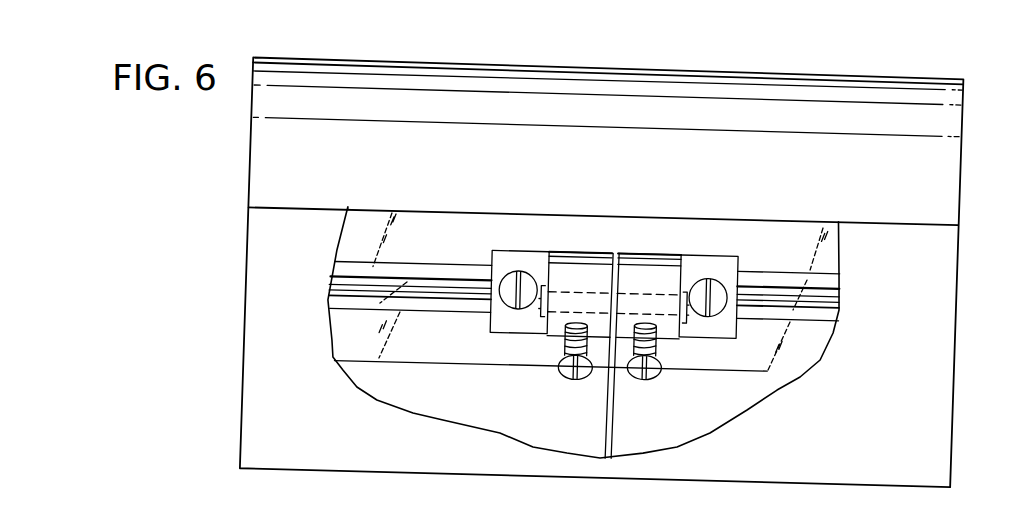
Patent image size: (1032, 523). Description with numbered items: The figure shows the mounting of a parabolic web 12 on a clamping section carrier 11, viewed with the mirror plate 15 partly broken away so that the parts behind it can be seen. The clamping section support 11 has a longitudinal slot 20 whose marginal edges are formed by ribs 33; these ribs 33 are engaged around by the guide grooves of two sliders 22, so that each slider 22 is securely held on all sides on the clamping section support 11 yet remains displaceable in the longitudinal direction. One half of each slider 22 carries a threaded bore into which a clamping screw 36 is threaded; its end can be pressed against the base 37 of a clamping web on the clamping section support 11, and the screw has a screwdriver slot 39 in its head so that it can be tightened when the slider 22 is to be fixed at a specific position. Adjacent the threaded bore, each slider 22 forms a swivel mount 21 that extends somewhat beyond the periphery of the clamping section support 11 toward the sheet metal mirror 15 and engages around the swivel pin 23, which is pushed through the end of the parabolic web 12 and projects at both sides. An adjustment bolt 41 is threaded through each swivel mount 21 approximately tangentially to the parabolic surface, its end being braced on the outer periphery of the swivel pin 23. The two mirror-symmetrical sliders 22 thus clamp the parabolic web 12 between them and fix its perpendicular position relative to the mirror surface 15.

The clamping section carrier 11 is at (943, 140).
The parabolic web 12 is at (613, 423).
The mirror plate 15 is at (259, 383).
The longitudinal slot 20 is at (407, 273).
The swivel mount 21 is at (541, 249).
The slider 22 is at (517, 251).
The swivel pin 23 is at (643, 294).
The rib 33 is at (471, 235).
The clamping screw 36 is at (525, 312).
The base of clamping web 37 is at (417, 298).
The screwdriver slot 39 is at (501, 330).
The adjustment bolt 41 is at (569, 381).